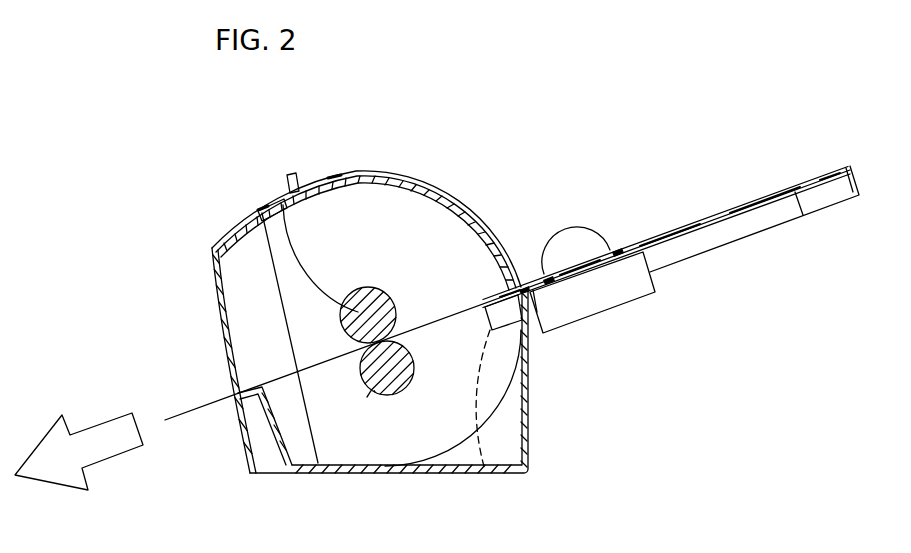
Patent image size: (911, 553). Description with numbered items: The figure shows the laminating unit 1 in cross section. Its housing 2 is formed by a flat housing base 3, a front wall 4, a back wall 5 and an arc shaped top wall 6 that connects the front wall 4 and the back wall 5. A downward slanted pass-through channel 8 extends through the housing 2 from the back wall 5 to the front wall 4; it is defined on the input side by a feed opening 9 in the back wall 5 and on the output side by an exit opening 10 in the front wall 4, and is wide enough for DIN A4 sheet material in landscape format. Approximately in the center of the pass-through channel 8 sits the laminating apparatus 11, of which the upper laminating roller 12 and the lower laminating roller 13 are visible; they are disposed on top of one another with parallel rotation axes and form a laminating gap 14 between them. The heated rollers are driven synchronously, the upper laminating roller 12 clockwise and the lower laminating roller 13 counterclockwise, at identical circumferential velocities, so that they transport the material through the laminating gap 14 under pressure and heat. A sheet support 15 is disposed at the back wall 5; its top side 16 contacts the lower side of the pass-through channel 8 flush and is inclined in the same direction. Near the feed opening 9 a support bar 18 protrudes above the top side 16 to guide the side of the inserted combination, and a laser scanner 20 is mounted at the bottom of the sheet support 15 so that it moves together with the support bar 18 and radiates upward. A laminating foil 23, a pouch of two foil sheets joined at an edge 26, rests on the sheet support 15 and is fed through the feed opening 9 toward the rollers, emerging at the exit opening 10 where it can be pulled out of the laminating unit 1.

The laminating unit 1 is at (489, 154).
The housing 2 is at (211, 248).
The housing base 3 is at (427, 473).
The front wall 4 is at (214, 290).
The back wall 5 is at (530, 395).
The arc shaped top wall 6 is at (411, 177).
The pass-through channel 8 is at (484, 472).
The feed opening 9 is at (522, 285).
The exit opening 10 is at (233, 392).
The laminating apparatus 11 is at (363, 286).
The upper laminating roller 12 is at (284, 201).
The lower laminating roller 13 is at (367, 397).
The laminating gap 14 is at (361, 372).
The sheet support 15 is at (722, 249).
The top side 16 is at (749, 203).
The support bar 18 is at (566, 247).
The laser scanner 20 is at (600, 285).
The laminating foil 23 is at (208, 408).
The edge 26 is at (620, 254).